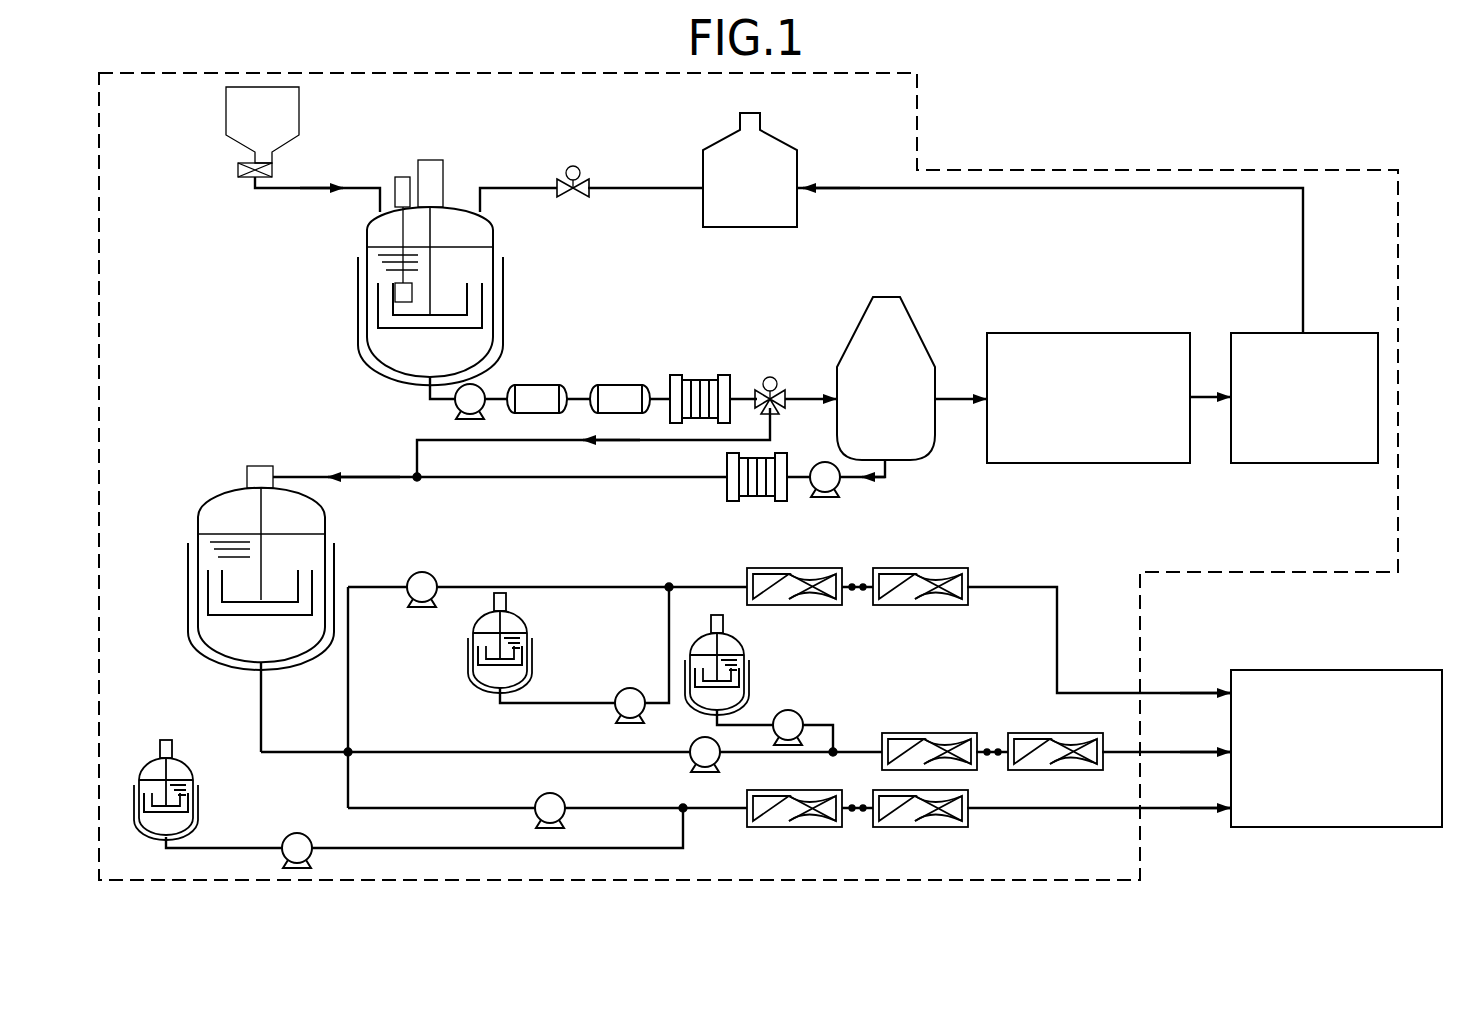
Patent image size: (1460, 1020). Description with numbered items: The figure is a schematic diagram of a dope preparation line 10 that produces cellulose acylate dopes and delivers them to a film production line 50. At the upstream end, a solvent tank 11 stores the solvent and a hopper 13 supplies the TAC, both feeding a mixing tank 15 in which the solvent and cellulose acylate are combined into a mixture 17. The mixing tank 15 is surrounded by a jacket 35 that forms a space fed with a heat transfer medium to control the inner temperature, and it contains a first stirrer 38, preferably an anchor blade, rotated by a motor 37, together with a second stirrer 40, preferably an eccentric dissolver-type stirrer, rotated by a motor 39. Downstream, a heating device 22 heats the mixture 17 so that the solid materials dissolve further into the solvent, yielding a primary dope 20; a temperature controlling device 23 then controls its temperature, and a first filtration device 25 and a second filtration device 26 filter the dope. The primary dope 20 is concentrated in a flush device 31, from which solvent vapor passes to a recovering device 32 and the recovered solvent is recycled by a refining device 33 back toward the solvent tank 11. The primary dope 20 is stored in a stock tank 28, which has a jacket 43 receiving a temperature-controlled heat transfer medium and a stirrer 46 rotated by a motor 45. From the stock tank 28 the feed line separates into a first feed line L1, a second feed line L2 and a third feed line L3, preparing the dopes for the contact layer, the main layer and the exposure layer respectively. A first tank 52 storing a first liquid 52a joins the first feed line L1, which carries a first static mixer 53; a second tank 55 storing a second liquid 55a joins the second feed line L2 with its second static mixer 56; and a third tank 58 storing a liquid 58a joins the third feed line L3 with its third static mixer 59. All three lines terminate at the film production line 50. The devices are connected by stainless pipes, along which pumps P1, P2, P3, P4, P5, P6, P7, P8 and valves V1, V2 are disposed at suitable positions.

The dope preparation line 10 is at (997, 165).
The solvent tank 11 is at (765, 125).
The hopper 13 is at (299, 103).
The mixing tank 15 is at (367, 228).
The mixture 17 is at (385, 345).
The primary dope 20 is at (262, 643).
The heating device 22 is at (537, 385).
The temperature controlling device 23 is at (618, 385).
The first filtration device 25 is at (700, 375).
The second filtration device 26 is at (757, 501).
The stock tank 28 is at (325, 512).
The flush device 31 is at (886, 297).
The recovering device 32 is at (1008, 463).
The refining device 33 is at (1252, 463).
The jacket 35 is at (503, 262).
The motor 37 is at (432, 160).
The first stirrer 38 is at (475, 298).
The motor 39 is at (405, 177).
The second stirrer 40 is at (395, 290).
The jacket 43 is at (188, 546).
The motor 45 is at (247, 478).
The stirrer 46 is at (208, 590).
The film production line 50 is at (1326, 670).
The first tank 52 is at (527, 622).
The first liquid 52a is at (515, 672).
The first static mixer 53 is at (930, 605).
The second tank 55 is at (744, 643).
The second liquid 55a is at (732, 693).
The second static mixer 56 is at (905, 733).
The third tank 58 is at (193, 770).
The second liquid 58a is at (182, 818).
The third static mixer 59 is at (930, 827).
The valve V1 is at (573, 165).
The valve V2 is at (770, 376).
The pump P1 is at (458, 415).
The pump P2 is at (825, 497).
The pump P3 is at (424, 570).
The pump P4 is at (616, 717).
The pump P5 is at (692, 765).
The pump P6 is at (800, 717).
The pump P7 is at (536, 821).
The pump P8 is at (283, 863).
The first feed line L1 is at (348, 700).
The second feed line L2 is at (452, 752).
The third feed line L3 is at (348, 778).